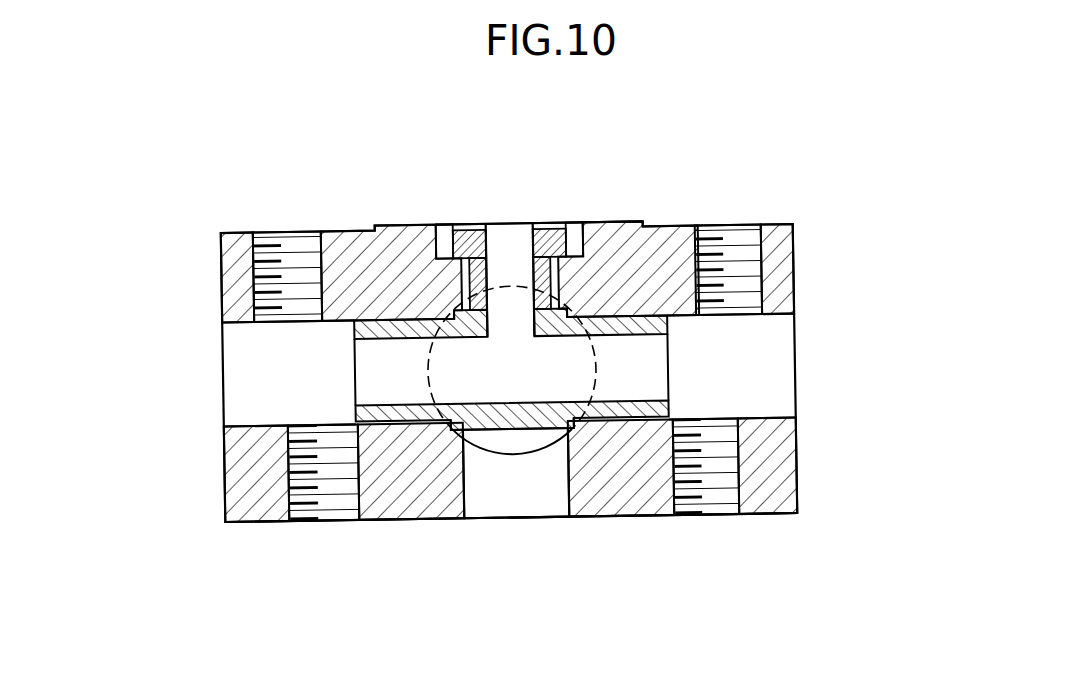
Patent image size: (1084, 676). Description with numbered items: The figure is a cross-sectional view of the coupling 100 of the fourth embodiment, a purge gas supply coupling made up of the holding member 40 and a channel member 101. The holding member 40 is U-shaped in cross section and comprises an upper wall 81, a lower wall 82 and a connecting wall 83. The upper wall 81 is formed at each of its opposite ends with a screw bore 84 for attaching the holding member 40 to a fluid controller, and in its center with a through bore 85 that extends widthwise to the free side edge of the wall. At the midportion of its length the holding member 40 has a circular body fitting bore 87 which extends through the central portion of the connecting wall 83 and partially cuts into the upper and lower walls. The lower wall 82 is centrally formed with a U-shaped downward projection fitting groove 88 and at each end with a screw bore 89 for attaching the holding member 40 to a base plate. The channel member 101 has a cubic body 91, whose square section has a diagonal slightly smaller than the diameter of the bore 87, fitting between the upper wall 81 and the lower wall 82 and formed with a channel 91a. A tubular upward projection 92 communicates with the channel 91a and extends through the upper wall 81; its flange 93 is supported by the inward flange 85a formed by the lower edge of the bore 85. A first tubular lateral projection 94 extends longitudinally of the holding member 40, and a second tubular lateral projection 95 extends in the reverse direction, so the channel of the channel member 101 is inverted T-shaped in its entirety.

The coupling 100 is at (803, 341).
The holding member 40 is at (242, 518).
The upper wall 81 is at (233, 253).
The lower wall 82 is at (223, 468).
The connecting wall 83 is at (237, 368).
The screw bore 84 is at (308, 238).
The through bore 85 is at (441, 236).
The inward flange 85a is at (574, 243).
The body fitting bore 87 is at (558, 432).
The downward projection fitting groove 88 is at (465, 488).
The screw bore 89 is at (293, 500).
The body 91 is at (613, 480).
The channel 91a is at (487, 403).
The upward projection 92 is at (483, 283).
The flange 93 is at (473, 238).
The lateral projection 94 is at (578, 440).
The second tubular lateral projection 95 is at (400, 505).
The channel member 101 is at (527, 443).